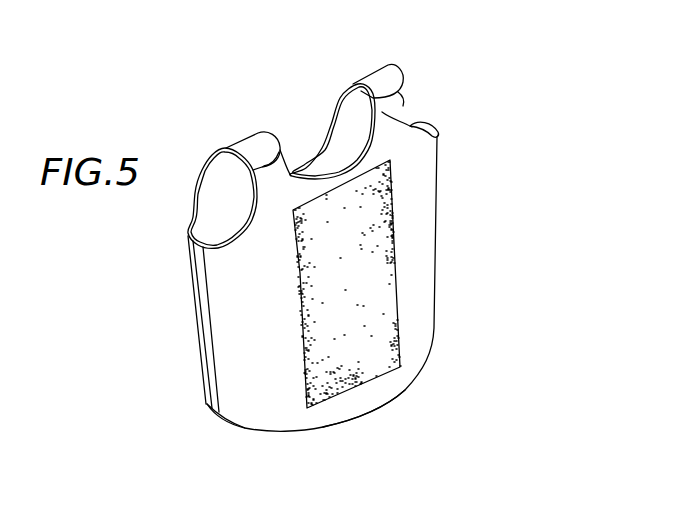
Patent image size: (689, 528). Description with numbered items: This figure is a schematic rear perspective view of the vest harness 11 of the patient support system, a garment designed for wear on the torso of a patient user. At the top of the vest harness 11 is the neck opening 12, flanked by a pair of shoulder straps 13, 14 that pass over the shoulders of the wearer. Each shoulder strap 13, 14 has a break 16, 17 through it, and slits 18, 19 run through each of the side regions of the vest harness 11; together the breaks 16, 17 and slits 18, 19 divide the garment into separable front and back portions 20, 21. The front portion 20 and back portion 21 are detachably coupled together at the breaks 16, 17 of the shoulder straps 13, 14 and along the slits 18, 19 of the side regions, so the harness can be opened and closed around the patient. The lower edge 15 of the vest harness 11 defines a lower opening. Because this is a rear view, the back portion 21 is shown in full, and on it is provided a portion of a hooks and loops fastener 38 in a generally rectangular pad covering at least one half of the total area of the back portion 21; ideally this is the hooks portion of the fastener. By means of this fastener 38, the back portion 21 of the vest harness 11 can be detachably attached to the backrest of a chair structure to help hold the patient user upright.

The vest harness 11 is at (444, 178).
The neck opening 12 is at (332, 125).
The shoulder strap 13 is at (205, 155).
The shoulder strap 14 is at (412, 123).
The lower edge 15 is at (392, 402).
The break 16 is at (282, 158).
The break 17 is at (397, 119).
The slit 18 is at (186, 242).
The slit 19 is at (432, 124).
The front portion 20 is at (200, 370).
The back portion 21 is at (250, 403).
The hooks and loops fastener 38 is at (378, 328).